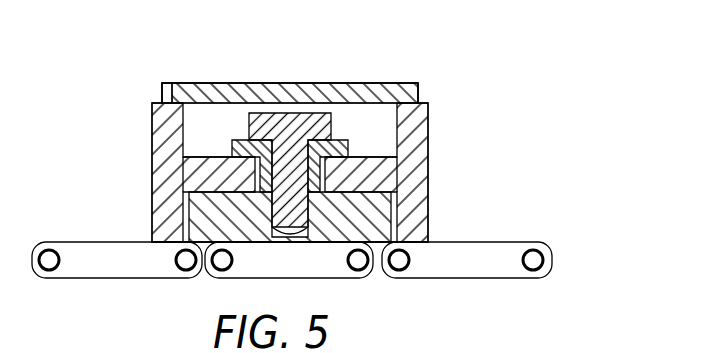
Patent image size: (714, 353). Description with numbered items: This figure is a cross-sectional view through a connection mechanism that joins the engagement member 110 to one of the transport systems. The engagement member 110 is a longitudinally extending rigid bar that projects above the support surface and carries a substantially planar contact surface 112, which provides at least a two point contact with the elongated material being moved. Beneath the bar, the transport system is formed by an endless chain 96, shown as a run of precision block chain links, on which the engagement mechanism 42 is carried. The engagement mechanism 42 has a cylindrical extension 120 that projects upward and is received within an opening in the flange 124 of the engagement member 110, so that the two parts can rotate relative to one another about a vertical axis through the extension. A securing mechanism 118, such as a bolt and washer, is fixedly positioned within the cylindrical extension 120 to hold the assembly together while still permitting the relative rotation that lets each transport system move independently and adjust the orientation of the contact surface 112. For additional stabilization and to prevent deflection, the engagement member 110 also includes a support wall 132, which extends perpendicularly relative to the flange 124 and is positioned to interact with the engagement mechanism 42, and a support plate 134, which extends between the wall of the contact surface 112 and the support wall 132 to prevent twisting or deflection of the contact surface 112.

The engagement member 110 is at (534, 166).
The contact surface 112 is at (438, 125).
The support plate 134 is at (242, 85).
The support wall 132 is at (170, 85).
The securing mechanism 118 is at (305, 120).
The cylindrical extension 120 is at (260, 180).
The flange 124 is at (207, 158).
The engagement mechanism 42 is at (190, 212).
The second endless chain 96 is at (472, 273).